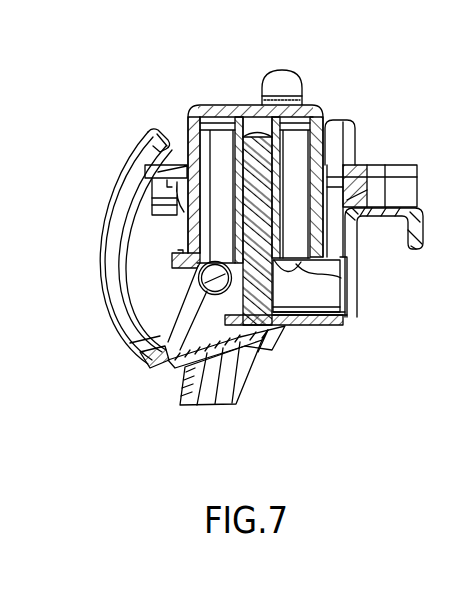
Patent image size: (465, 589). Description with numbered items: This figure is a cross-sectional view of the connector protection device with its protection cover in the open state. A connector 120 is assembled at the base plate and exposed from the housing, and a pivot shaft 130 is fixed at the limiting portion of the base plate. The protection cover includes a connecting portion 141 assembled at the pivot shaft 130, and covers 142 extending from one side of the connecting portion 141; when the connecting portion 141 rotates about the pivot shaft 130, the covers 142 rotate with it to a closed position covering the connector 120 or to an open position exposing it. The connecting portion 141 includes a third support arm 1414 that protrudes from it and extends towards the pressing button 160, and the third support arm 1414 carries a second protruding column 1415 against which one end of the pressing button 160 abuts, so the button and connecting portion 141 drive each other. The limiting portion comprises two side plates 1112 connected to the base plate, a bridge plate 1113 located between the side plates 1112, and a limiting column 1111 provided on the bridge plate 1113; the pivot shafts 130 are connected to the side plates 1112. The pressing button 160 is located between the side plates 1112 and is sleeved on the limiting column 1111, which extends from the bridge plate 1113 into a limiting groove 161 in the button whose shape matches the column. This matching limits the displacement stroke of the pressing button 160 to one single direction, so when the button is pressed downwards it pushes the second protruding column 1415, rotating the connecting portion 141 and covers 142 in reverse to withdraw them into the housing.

The pressing button 160 is at (198, 117).
The limiting groove 161 is at (255, 137).
The connector 120 is at (333, 130).
The pivot shaft 130 is at (275, 283).
The side plate 1112 is at (330, 296).
The bridge plate 1113 is at (330, 326).
The limiting column 1111 is at (278, 364).
The second protruding column 1415 is at (198, 284).
The cover 142 is at (110, 308).
The third support arm 1414 is at (138, 328).
The connecting portion 141 is at (163, 371).